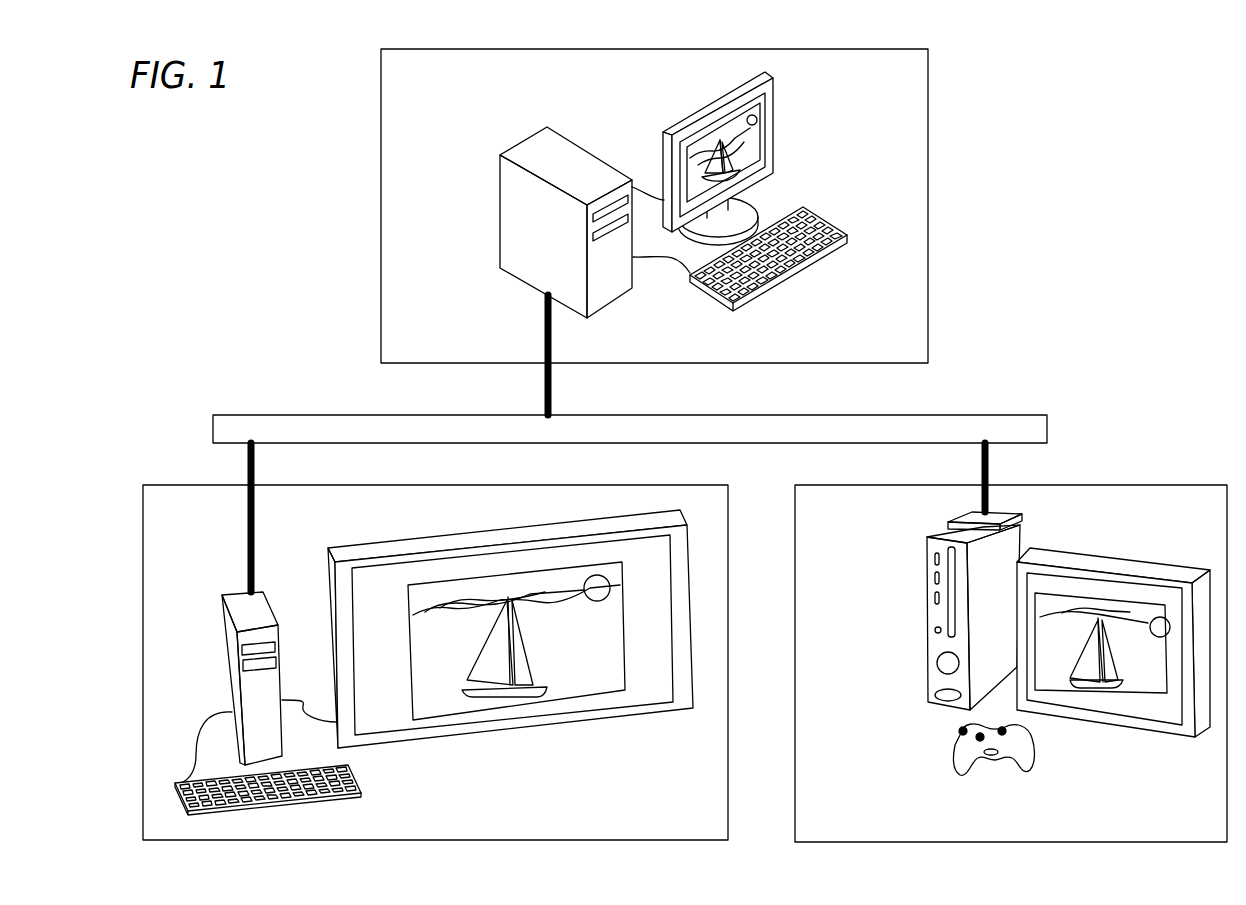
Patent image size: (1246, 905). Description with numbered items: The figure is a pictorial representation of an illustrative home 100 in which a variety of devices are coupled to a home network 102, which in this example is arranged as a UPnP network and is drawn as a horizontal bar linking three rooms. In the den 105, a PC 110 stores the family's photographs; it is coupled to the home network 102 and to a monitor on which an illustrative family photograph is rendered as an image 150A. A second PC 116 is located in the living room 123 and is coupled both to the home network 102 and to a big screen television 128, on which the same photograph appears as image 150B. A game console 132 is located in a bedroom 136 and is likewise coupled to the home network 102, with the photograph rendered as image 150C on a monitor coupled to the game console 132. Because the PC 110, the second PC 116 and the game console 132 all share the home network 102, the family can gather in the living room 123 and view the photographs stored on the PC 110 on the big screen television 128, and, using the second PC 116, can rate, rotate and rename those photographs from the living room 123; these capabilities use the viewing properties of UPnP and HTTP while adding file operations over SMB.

The home 100 is at (307, 251).
The den 105 is at (928, 94).
The PC 110 is at (430, 86).
The image 150A is at (753, 142).
The home network 102 is at (1015, 412).
The living room 123 is at (164, 485).
The second PC 116 is at (211, 586).
The big screen television 128 is at (512, 730).
The image 150B is at (595, 667).
The bedroom 136 is at (1191, 485).
The game console 132 is at (882, 526).
The image 150C is at (1143, 687).